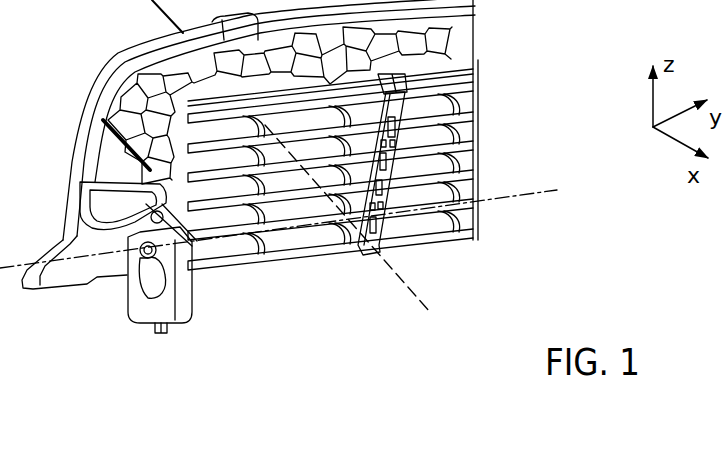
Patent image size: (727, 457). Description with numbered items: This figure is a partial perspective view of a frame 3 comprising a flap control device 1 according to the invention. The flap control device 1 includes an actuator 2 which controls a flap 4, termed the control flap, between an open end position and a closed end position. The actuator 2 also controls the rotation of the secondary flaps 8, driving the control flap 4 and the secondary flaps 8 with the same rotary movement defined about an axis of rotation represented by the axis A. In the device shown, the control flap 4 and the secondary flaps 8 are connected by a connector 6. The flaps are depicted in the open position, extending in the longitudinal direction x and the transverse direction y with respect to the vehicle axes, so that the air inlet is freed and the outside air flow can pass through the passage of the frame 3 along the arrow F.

The flap control device 1 is at (308, 207).
The actuator 2 is at (145, 312).
The frame 3 is at (258, 258).
The control flap 4 is at (318, 235).
The connector 6 is at (383, 237).
The secondary flaps 8 is at (194, 202).